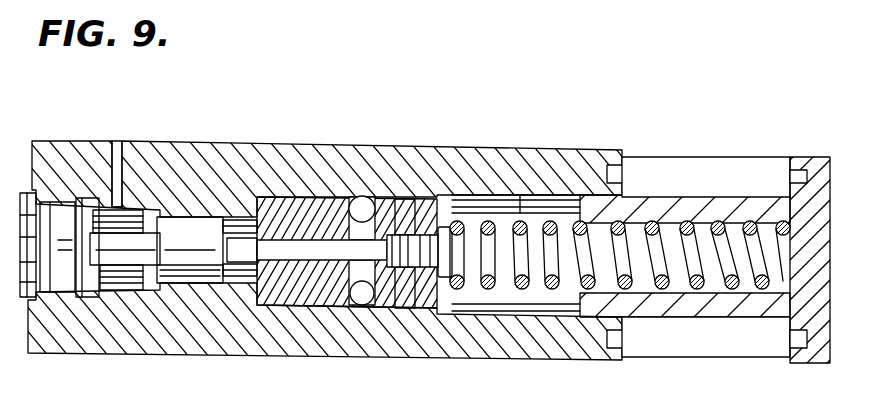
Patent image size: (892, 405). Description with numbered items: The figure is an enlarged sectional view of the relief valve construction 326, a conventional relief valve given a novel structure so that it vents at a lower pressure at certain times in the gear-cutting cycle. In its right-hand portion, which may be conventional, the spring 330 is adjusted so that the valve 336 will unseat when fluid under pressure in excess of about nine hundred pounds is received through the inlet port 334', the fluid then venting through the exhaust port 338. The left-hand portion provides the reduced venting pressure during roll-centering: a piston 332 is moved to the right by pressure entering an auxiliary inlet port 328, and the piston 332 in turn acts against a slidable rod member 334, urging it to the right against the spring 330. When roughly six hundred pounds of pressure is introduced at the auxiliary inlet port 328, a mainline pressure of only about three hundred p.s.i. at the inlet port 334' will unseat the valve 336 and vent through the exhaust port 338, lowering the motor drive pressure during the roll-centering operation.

The relief valve construction 326 is at (183, 358).
The auxiliary inlet port 328 is at (116, 153).
The spring 330 is at (556, 218).
The piston 332 is at (200, 222).
The slidable rod member 334 is at (347, 191).
The inlet port 334' is at (415, 168).
The valve 336 is at (453, 230).
The exhaust port 338 is at (455, 290).